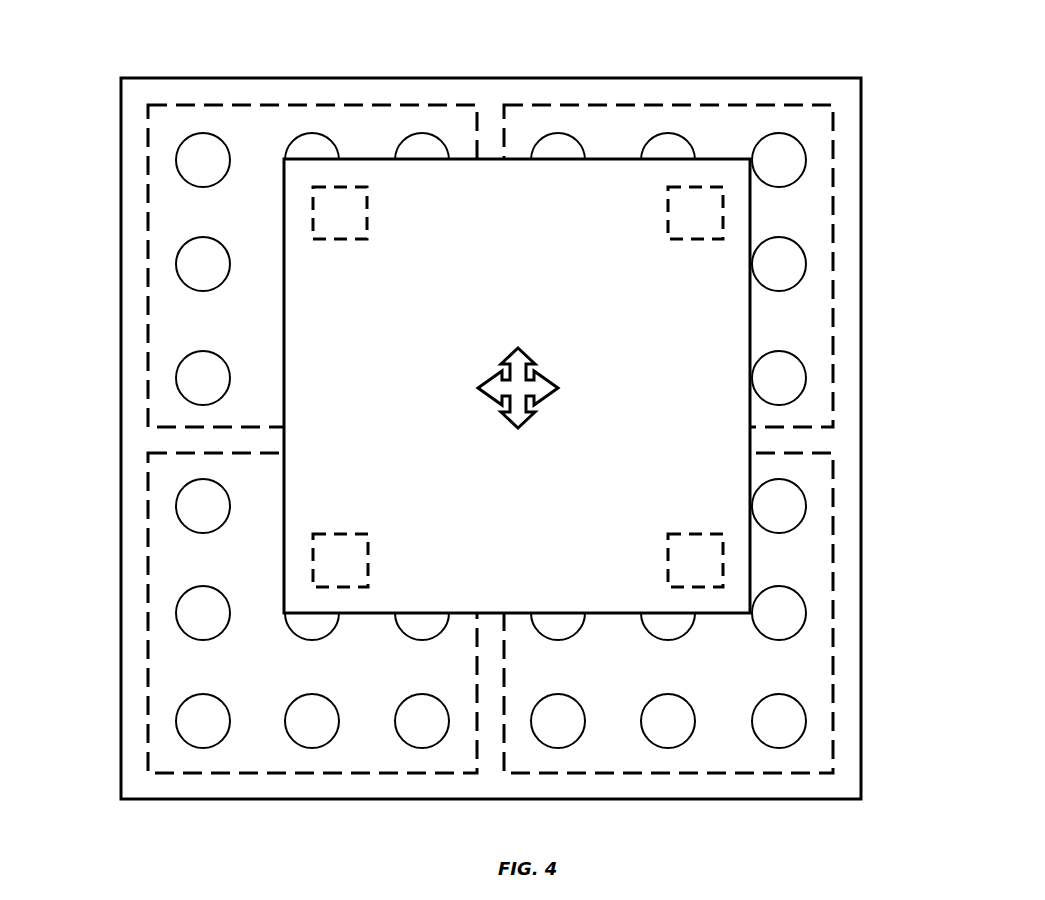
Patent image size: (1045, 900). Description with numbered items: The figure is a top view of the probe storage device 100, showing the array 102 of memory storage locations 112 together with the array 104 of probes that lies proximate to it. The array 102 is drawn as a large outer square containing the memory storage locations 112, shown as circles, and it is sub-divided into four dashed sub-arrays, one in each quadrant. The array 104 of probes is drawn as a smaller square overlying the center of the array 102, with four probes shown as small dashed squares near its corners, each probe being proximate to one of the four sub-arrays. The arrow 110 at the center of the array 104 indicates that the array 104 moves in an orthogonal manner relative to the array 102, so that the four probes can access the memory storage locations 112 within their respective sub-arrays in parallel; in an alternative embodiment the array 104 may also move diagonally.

The probe storage device 100 is at (490, 407).
The array of memory storage locations 102 is at (96, 51).
The array of probes 104 is at (285, 343).
The arrow 110 is at (516, 389).
The memory storage location 112 is at (807, 613).